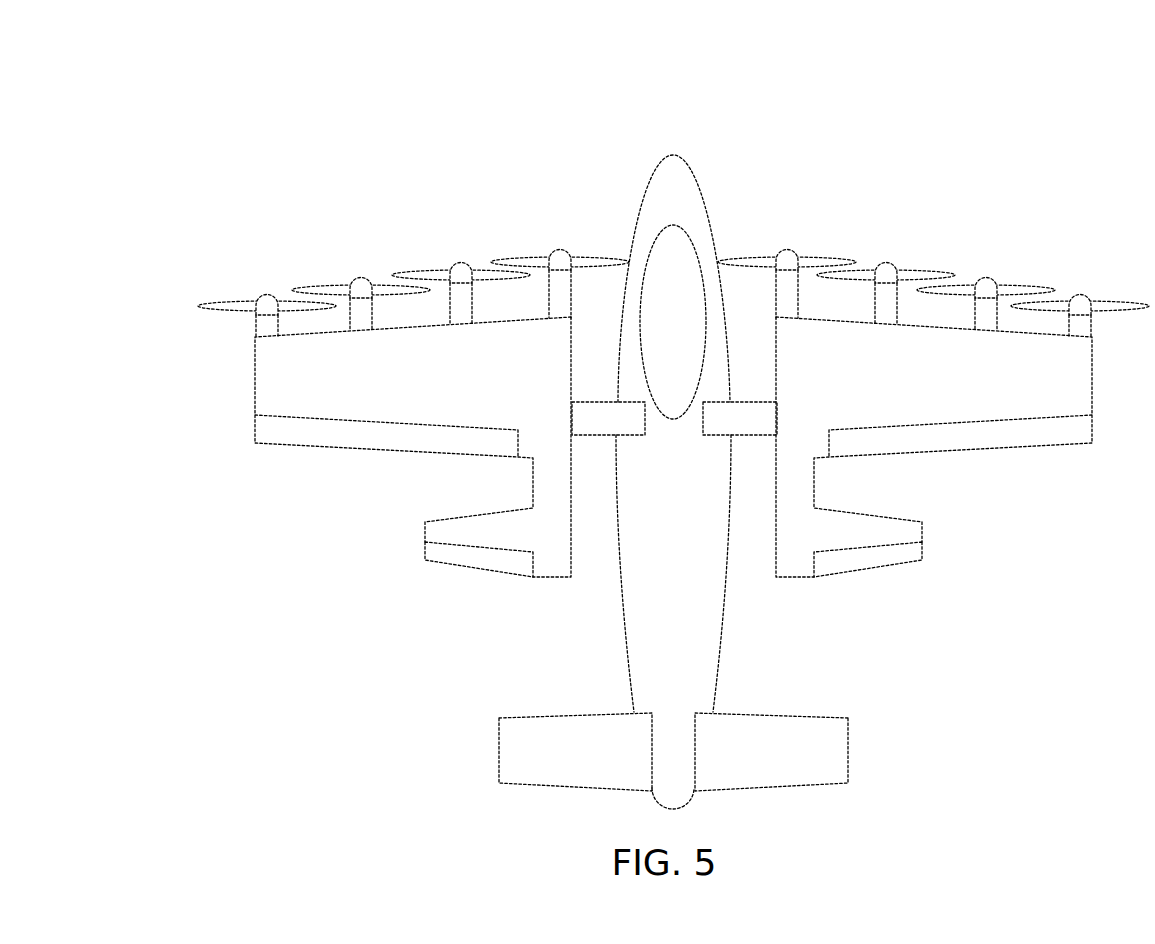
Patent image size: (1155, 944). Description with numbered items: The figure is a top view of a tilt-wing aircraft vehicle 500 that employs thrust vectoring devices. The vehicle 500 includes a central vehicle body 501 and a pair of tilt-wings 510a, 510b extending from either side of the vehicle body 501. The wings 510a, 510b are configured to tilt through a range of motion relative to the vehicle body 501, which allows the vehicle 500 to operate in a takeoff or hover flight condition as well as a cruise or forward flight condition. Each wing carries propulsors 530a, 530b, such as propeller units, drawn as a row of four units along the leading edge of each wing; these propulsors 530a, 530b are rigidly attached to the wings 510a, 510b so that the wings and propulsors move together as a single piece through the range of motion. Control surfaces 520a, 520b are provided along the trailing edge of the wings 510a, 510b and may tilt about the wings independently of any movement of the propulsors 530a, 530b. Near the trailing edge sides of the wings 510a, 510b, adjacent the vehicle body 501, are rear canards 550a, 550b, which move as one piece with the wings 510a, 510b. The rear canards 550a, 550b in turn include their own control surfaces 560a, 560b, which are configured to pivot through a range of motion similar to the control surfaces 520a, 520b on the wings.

The vehicle 500 is at (701, 104).
The vehicle body 501 is at (605, 628).
The tilt-wing 510a is at (368, 391).
The tilt-wing 510b is at (908, 391).
The control surface 520a is at (342, 466).
The control surface 520b is at (1006, 467).
The propulsors 530a is at (260, 282).
The propulsors 530b is at (783, 229).
The rear canard 550a is at (634, 429).
The rear canard 550b is at (714, 429).
The control surface 560a is at (465, 583).
The control surface 560b is at (882, 585).